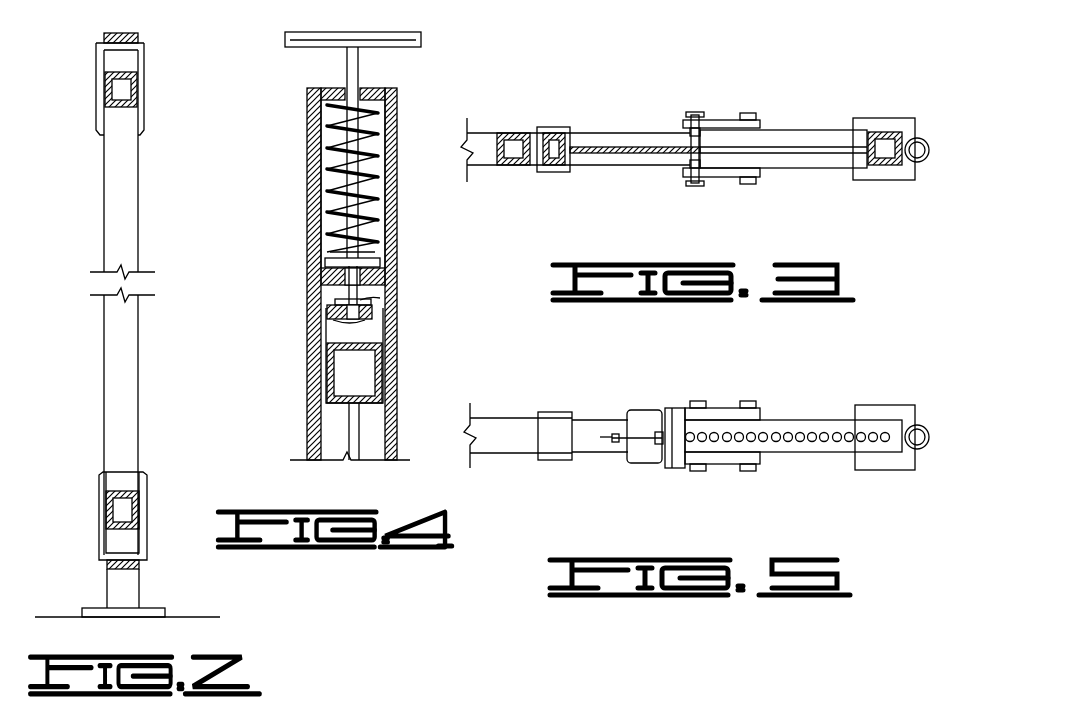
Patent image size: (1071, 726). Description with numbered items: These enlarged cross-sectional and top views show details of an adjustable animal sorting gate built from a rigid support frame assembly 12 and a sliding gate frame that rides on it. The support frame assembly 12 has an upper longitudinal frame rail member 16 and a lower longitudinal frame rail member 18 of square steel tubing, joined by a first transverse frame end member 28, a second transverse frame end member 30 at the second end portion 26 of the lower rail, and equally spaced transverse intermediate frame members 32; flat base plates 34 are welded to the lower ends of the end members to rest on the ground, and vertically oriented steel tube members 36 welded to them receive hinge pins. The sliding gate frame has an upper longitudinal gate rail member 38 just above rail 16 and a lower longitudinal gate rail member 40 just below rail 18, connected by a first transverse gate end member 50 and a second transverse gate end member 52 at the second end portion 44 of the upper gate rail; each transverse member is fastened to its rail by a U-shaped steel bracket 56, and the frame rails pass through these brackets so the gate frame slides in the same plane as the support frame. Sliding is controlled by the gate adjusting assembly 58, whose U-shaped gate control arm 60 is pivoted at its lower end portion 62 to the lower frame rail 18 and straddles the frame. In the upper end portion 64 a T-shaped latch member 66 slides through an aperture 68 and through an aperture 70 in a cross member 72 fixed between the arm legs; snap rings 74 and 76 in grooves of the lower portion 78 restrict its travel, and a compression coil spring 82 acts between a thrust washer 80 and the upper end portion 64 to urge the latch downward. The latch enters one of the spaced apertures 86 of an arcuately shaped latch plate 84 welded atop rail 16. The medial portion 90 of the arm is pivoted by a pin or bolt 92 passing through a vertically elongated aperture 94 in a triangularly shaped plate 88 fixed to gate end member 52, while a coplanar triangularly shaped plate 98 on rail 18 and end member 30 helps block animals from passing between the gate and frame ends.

In FIG. 5, the rigid support frame assembly 12 is at (585, 455).
In FIG. 2, the upper longitudinal frame rail member 16 is at (120, 75).
In FIG. 4, the upper longitudinal frame rail member 16 is at (365, 365).
In FIG. 5, the upper longitudinal frame rail member 16 is at (590, 428).
In FIG. 2, the lower longitudinal frame rail member 18 is at (118, 510).
In FIG. 3, the lower longitudinal frame rail member 18 is at (605, 110).
In FIG. 3, the second end portion 26 is at (855, 133).
In FIG. 2, the first transverse frame end member 28 is at (128, 597).
In FIG. 3, the second transverse frame end member 30 is at (880, 178).
In FIG. 3, the transverse intermediate frame members 32 is at (515, 132).
In FIG. 2, the base plates 34 is at (92, 608).
In FIG. 3, the base plates 34 is at (890, 120).
In FIG. 5, the base plates 34 is at (885, 380).
In FIG. 3, the vertically oriented steel tube members 36 is at (925, 140).
In FIG. 5, the vertically oriented steel tube members 36 is at (925, 450).
In FIG. 2, the upper longitudinal gate rail member 38 is at (115, 33).
In FIG. 5, the upper longitudinal gate rail member 38 is at (495, 445).
In FIG. 2, the lower longitudinal gate rail member 40 is at (107, 575).
In FIG. 5, the second end portion 44 is at (550, 412).
In FIG. 2, the first transverse gate end member 50 is at (130, 195).
In FIG. 3, the second transverse gate end member 52 is at (552, 128).
In FIG. 2, the U-shaped steel bracket 56 is at (96, 62).
In FIG. 3, the U-shaped steel bracket 56 is at (552, 172).
In FIG. 4, the gate adjusting assembly 58 is at (405, 263).
In FIG. 5, the gate adjusting assembly 58 is at (660, 465).
In FIG. 4, the gate control arm 60 is at (400, 225).
In FIG. 3, the gate control arm 60 is at (715, 122).
In FIG. 3, the lower end portion 62 is at (750, 178).
In FIG. 5, the lower end portion 62 is at (755, 465).
In FIG. 4, the upper end portion 64 is at (398, 102).
In FIG. 5, the upper end portion 64 is at (645, 425).
In FIG. 4, the T-shaped latch member 66 is at (365, 35).
In FIG. 5, the T-shaped latch member 66 is at (635, 435).
In FIG. 4, the aperture 68 is at (356, 90).
In FIG. 4, the aperture 70 is at (345, 297).
In FIG. 4, the cross member 72 is at (325, 275).
In FIG. 5, the cross member 72 is at (672, 425).
In FIG. 4, the snap ring 74 is at (385, 245).
In FIG. 4, the snap ring 76 is at (370, 295).
In FIG. 4, the lower portion 78 is at (360, 283).
In FIG. 4, the thrust washer 80 is at (340, 258).
In FIG. 4, the compression coil spring 82 is at (368, 180).
In FIG. 4, the arcuately shaped latch plate 84 is at (345, 312).
In FIG. 5, the arcuately shaped latch plate 84 is at (790, 425).
In FIG. 4, the spaced apertures 86 is at (352, 330).
In FIG. 5, the spaced apertures 86 is at (815, 430).
In FIG. 3, the triangularly shaped plate 88 is at (625, 147).
In FIG. 3, the medial portion 90 is at (690, 178).
In FIG. 5, the medial portion 90 is at (728, 380).
In FIG. 3, the pin or bolt 92 is at (690, 158).
In FIG. 5, the pin or bolt 92 is at (695, 472).
In FIG. 3, the vertically elongated aperture 94 is at (690, 135).
In FIG. 3, the triangularly shaped plate 98 is at (790, 148).